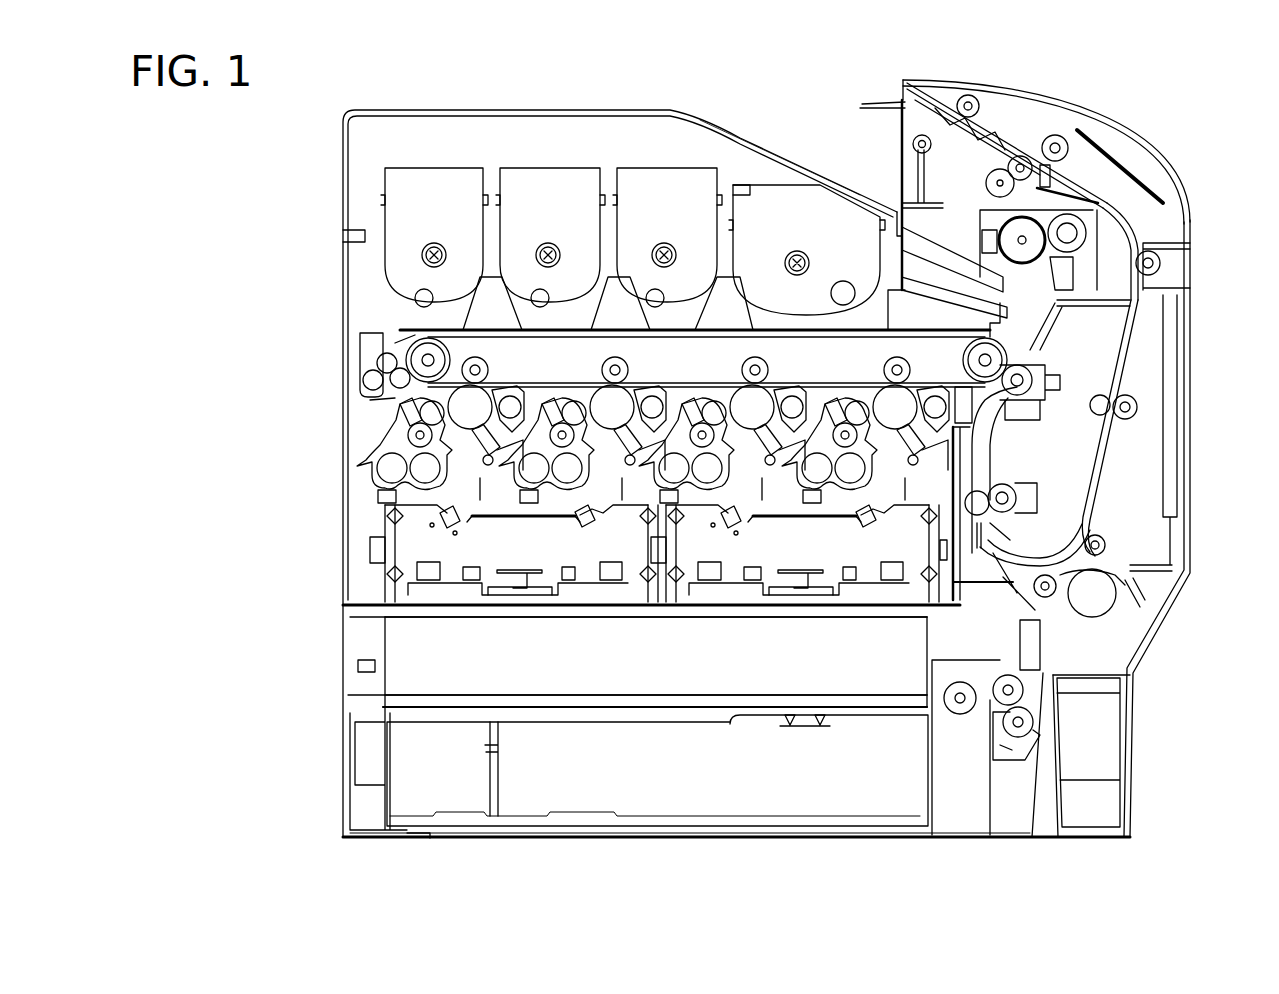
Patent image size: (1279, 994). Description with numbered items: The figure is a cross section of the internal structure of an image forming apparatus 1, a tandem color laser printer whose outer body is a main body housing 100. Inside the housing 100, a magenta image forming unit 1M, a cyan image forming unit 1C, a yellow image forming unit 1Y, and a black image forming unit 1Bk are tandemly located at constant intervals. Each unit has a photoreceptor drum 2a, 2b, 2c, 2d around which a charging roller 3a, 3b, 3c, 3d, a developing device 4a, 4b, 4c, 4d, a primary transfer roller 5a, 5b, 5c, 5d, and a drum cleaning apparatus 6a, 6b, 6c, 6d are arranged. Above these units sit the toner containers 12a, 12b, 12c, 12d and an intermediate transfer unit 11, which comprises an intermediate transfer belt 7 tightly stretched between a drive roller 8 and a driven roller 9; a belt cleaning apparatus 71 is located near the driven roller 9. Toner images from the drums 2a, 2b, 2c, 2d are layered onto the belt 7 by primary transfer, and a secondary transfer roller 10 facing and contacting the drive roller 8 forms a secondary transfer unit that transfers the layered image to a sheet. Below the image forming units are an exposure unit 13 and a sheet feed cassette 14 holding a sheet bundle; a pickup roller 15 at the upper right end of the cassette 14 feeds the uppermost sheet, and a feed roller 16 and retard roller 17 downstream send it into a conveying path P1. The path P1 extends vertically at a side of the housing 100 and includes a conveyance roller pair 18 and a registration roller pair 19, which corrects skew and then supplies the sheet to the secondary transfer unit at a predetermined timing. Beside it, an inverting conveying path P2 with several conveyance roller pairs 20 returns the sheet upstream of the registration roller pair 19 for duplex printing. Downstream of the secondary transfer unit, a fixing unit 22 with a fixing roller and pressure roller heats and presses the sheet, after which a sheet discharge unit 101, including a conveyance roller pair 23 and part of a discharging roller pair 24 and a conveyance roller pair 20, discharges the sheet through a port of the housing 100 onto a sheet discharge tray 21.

The image forming apparatus 1 is at (415, 84).
The main body housing 100 is at (343, 280).
The sheet discharge unit 101 is at (1060, 80).
The toner container 12a is at (458, 168).
The toner container 12b is at (588, 168).
The toner container 12c is at (662, 168).
The toner container 12d is at (800, 185).
The sheet discharge tray 21 is at (772, 150).
The discharging roller pair 24 is at (912, 143).
The conveyance roller pairs 20 is at (970, 96).
The conveyance roller pair 23 is at (1022, 157).
The fixing unit 22 is at (1033, 262).
The intermediate transfer belt 7 is at (888, 330).
The driven roller 9 is at (410, 342).
The drive roller 8 is at (998, 345).
The intermediate transfer unit 11 is at (358, 372).
The belt cleaning apparatus 71 is at (378, 402).
The magenta image forming unit 1M is at (462, 492).
The cyan image forming unit 1C is at (603, 495).
The yellow image forming unit 1Y is at (750, 505).
The black image forming unit 1Bk is at (900, 510).
The photoreceptor drum 2a is at (492, 390).
The photoreceptor drum 2b is at (634, 390).
The photoreceptor drum 2c is at (776, 390).
The photoreceptor drum 2d is at (915, 390).
The primary transfer roller 5a is at (477, 355).
The primary transfer roller 5b is at (614, 355).
The primary transfer roller 5c is at (745, 365).
The primary transfer roller 5d is at (886, 365).
The drum cleaning apparatus 6a is at (525, 395).
The drum cleaning apparatus 6b is at (666, 395).
The drum cleaning apparatus 6c is at (806, 395).
The drum cleaning apparatus 6d is at (950, 345).
The charging roller 3a is at (466, 500).
The charging roller 3b is at (608, 500).
The charging roller 3c is at (750, 500).
The charging roller 3d is at (893, 500).
The developing device 4a is at (382, 442).
The developing device 4b is at (558, 478).
The developing device 4c is at (708, 490).
The developing device 4d is at (846, 478).
The secondary transfer roller 10 is at (1028, 397).
The conveying path P1 is at (985, 472).
The inverting conveying path P2 is at (1135, 350).
The registration roller pair 19 is at (1018, 490).
The conveyance roller pair 18 is at (1010, 596).
The exposure unit 13 is at (590, 618).
The sheet feed cassette 14 is at (812, 795).
The pickup roller 15 is at (958, 715).
The feed roller 16 is at (1004, 676).
The retard roller 17 is at (1035, 722).